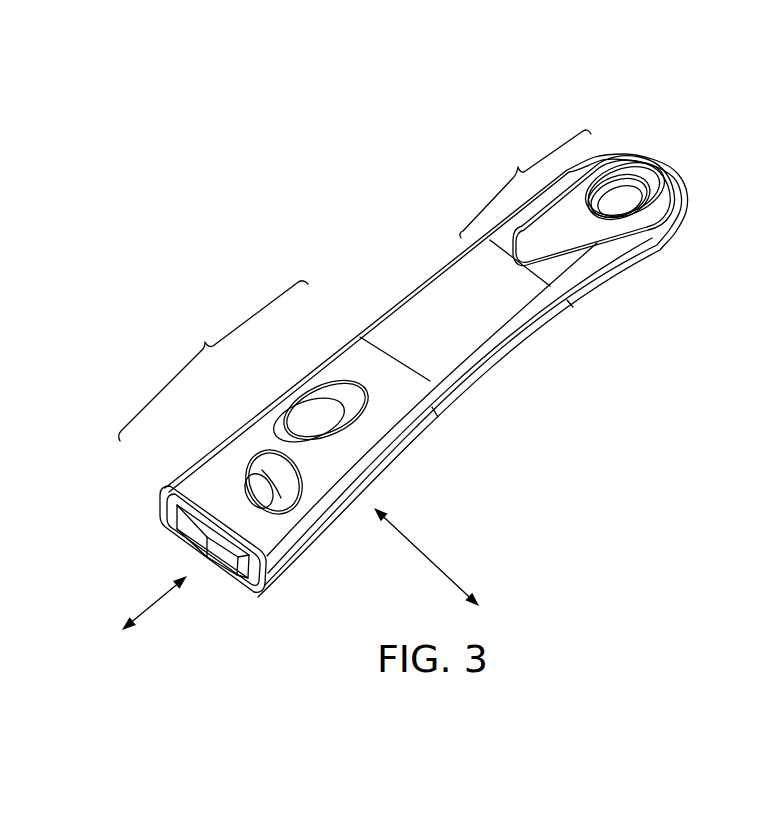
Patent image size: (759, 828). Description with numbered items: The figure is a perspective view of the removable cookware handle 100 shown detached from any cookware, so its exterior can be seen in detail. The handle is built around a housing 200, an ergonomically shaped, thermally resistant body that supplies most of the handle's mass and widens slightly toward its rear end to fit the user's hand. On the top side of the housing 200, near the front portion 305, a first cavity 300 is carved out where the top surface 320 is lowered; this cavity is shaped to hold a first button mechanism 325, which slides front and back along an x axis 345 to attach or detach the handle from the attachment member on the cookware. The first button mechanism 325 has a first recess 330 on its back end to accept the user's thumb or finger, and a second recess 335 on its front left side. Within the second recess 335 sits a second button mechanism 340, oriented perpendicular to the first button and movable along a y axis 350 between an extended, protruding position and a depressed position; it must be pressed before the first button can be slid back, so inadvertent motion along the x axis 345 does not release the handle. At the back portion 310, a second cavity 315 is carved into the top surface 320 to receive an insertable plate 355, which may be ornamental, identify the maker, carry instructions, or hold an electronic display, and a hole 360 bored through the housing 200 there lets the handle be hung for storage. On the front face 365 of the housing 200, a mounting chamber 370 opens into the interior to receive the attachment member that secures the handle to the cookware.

The removable cookware handle 100 is at (170, 278).
The housing 200 is at (402, 308).
The first cavity 300 is at (318, 388).
The front portion 305 is at (213, 361).
The back portion 310 is at (525, 184).
The second cavity 315 is at (604, 242).
The top surface 320 is at (402, 390).
The first button mechanism 325 is at (198, 472).
The first recess 330 is at (329, 435).
The second recess 335 is at (288, 470).
The second button mechanism 340 is at (263, 493).
The x axis 345 is at (165, 602).
The y axis 350 is at (440, 558).
The insertable plate 355 is at (574, 212).
The hole 360 is at (625, 203).
The front face 365 is at (218, 582).
The mounting chamber 370 is at (194, 547).